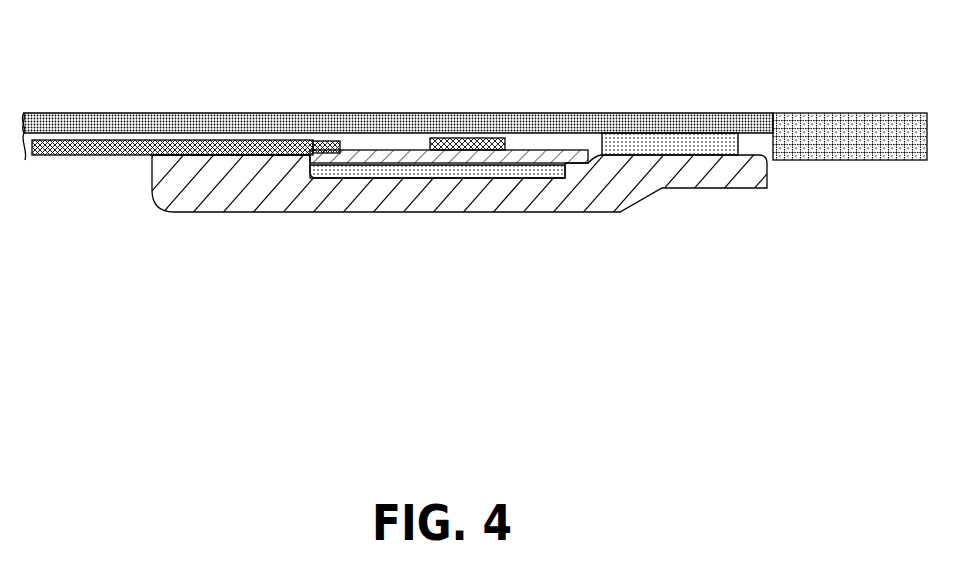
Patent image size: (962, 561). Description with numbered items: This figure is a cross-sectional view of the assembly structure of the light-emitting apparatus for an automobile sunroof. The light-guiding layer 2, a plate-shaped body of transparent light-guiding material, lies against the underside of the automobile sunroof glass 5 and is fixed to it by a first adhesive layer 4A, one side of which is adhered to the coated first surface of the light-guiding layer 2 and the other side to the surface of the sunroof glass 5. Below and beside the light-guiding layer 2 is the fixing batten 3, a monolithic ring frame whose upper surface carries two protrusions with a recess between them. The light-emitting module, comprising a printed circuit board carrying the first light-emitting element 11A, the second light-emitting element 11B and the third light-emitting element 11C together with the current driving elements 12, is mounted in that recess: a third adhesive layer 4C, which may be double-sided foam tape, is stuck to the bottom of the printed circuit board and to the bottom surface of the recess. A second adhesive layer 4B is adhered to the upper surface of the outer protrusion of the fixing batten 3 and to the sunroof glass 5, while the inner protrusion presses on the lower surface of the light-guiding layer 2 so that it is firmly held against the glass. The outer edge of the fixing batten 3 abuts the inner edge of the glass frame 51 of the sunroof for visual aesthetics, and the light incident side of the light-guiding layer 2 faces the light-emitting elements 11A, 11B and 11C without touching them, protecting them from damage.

The light-guiding layer 2 is at (112, 155).
The fixing batten 3 is at (507, 217).
The first adhesive layer 4A is at (152, 133).
The second adhesive layer 4B is at (683, 142).
The third adhesive layer 4C is at (382, 172).
The automobile sunroof glass 5 is at (247, 120).
The first light-emitting element 11A is at (434, 99).
The second light-emitting element 11B is at (449, 152).
The third light-emitting element 11C is at (318, 150).
The current driving element 12 is at (473, 143).
The glass frame 51 is at (870, 130).